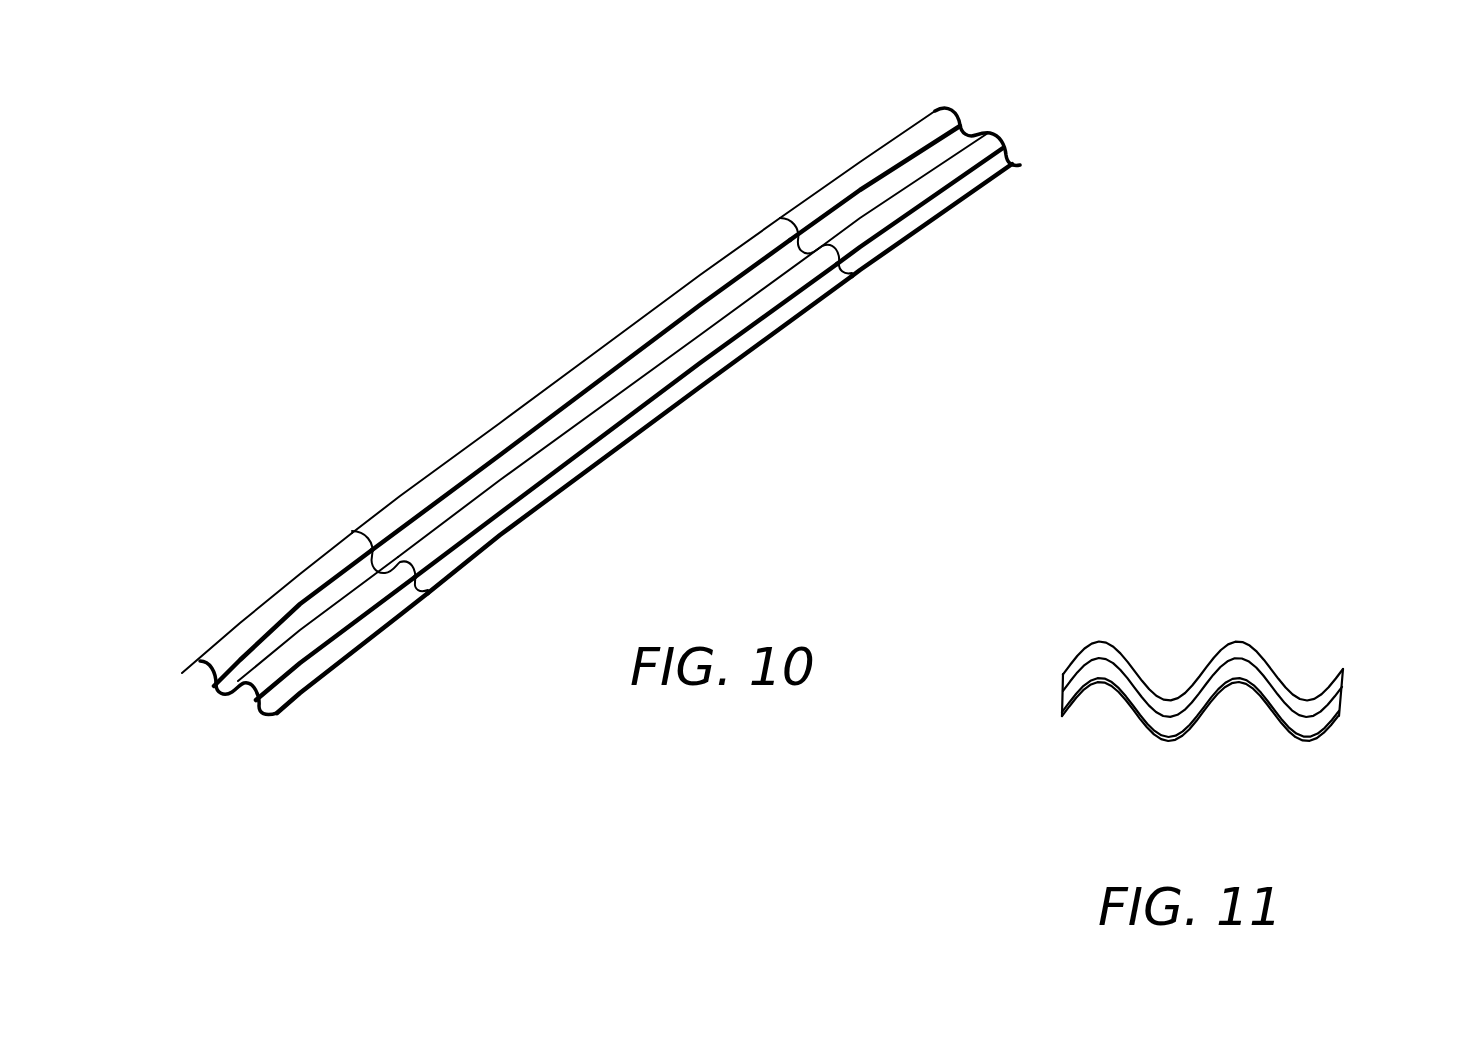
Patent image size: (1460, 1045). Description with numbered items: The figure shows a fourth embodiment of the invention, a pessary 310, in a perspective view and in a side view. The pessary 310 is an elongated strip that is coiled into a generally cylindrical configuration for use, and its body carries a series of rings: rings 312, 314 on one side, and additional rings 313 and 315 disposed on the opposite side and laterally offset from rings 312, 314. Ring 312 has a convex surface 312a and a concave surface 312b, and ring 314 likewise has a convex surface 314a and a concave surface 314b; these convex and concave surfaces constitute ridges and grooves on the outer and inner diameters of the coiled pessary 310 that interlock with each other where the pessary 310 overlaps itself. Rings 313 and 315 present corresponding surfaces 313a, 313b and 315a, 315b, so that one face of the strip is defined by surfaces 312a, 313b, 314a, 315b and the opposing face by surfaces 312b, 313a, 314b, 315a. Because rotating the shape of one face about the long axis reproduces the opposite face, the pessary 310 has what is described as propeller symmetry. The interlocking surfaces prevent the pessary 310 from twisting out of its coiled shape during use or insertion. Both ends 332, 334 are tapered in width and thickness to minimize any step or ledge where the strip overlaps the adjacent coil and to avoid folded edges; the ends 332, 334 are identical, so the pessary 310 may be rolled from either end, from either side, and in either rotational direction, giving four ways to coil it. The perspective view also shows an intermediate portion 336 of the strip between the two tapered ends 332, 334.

In FIG. 10, the pessary 310 is at (553, 297).
In FIG. 10, the tapered end 332 is at (288, 580).
In FIG. 10, the tapered end 334 is at (883, 142).
In FIG. 10, the third corrugated sheet segment 336 is at (624, 458).
In FIG. 11, the ring 312 is at (1087, 637).
In FIG. 11, the convex surface 312a is at (1078, 652).
In FIG. 11, the concave surface 312b is at (1101, 683).
In FIG. 11, the ring 313 is at (1163, 745).
In FIG. 11, the interlocking surface 313a is at (1180, 744).
In FIG. 11, the interlocking surface 313b is at (1161, 703).
In FIG. 11, the ring 314 is at (1233, 637).
In FIG. 11, the convex surface 314a is at (1247, 648).
In FIG. 11, the concave surface 314b is at (1232, 683).
In FIG. 11, the ring 315 is at (1317, 745).
In FIG. 11, the interlocking surface 315a is at (1323, 740).
In FIG. 11, the interlocking surface 315b is at (1304, 699).